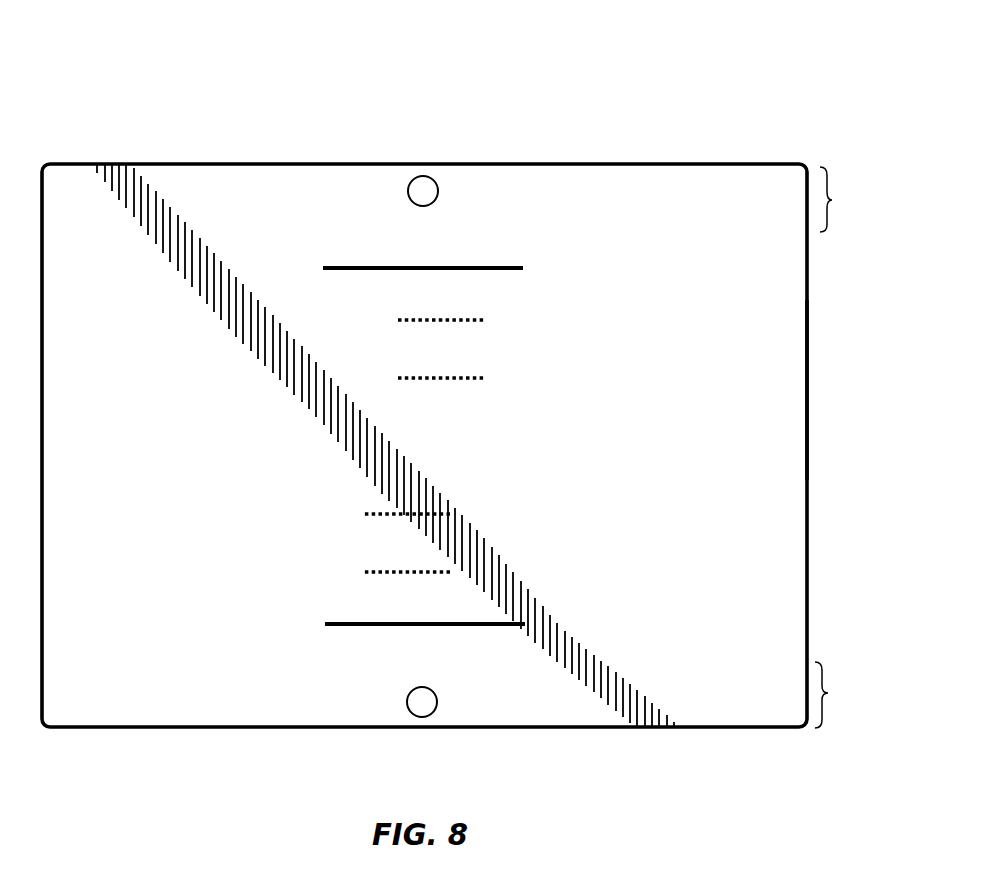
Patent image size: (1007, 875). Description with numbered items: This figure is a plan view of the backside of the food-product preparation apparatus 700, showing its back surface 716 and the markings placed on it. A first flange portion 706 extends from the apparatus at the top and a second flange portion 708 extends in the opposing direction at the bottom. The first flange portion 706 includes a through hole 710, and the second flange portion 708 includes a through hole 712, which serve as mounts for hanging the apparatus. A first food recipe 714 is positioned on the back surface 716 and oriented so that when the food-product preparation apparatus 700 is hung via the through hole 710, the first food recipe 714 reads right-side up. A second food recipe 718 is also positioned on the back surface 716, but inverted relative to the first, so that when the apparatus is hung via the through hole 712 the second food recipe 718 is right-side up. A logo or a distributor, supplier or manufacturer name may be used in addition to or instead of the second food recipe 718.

The food-product preparation apparatus 700 is at (677, 103).
The first flange portion 706 is at (847, 199).
The second flange portion 708 is at (844, 695).
The through hole 710 is at (424, 188).
The through hole 712 is at (420, 705).
The first food recipe 714 is at (306, 225).
The back surface 716 is at (829, 390).
The second food recipe 718 is at (298, 614).